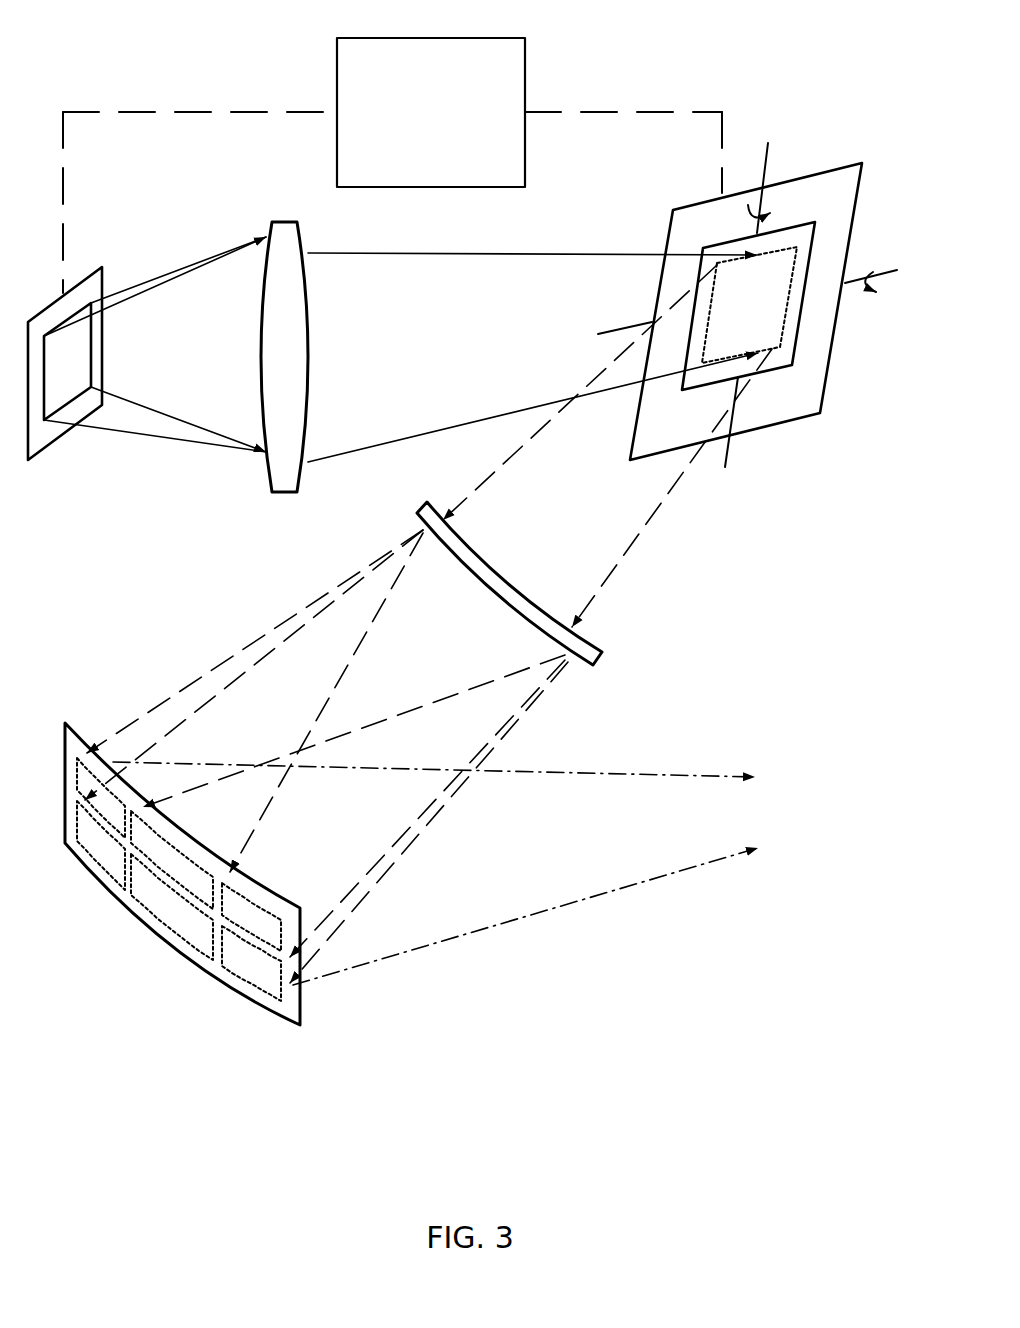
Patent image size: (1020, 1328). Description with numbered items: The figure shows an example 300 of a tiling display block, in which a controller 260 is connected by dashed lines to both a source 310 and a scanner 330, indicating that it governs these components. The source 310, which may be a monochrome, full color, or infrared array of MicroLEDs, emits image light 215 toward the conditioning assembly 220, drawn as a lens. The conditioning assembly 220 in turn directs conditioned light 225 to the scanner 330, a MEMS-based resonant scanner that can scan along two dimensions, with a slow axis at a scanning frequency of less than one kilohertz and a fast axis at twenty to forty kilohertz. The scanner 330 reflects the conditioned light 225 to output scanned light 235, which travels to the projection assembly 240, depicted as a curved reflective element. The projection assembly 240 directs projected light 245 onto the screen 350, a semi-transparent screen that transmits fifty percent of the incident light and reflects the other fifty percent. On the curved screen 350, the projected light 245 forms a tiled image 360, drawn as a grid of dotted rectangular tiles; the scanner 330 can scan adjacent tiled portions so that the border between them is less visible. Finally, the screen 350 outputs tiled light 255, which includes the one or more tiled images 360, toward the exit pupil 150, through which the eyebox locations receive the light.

The example 300 is at (133, 55).
The controller 260 is at (410, 139).
The source 310 is at (63, 437).
The image light 215 is at (152, 280).
The conditioning assembly 220 is at (307, 383).
The conditioned light 225 is at (443, 252).
The scanner 330 is at (767, 393).
The scanned light 235 is at (613, 568).
The projection assembly 240 is at (598, 663).
The projected light 245 is at (310, 603).
The screen 350 is at (88, 740).
The tiled image 360 is at (167, 908).
The tiled light 255 is at (545, 913).
The exit pupil 150 is at (792, 845).